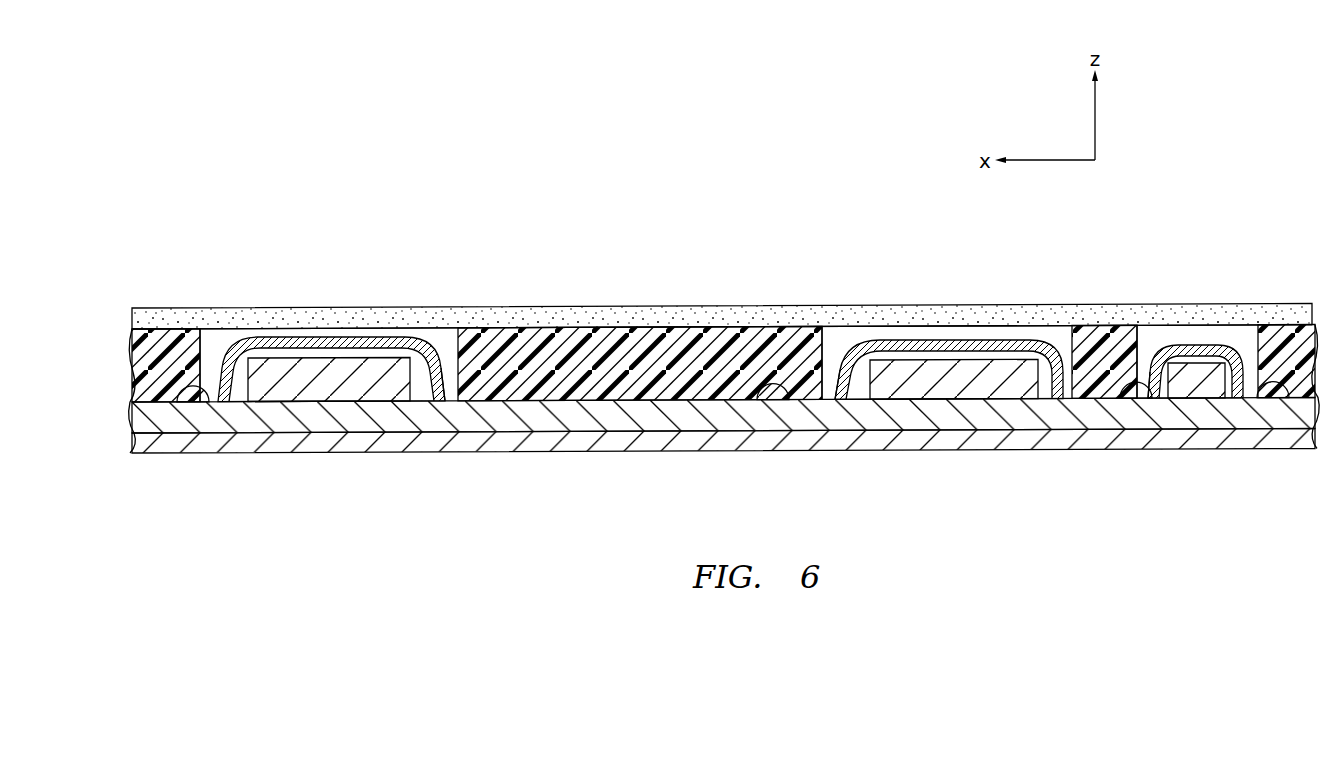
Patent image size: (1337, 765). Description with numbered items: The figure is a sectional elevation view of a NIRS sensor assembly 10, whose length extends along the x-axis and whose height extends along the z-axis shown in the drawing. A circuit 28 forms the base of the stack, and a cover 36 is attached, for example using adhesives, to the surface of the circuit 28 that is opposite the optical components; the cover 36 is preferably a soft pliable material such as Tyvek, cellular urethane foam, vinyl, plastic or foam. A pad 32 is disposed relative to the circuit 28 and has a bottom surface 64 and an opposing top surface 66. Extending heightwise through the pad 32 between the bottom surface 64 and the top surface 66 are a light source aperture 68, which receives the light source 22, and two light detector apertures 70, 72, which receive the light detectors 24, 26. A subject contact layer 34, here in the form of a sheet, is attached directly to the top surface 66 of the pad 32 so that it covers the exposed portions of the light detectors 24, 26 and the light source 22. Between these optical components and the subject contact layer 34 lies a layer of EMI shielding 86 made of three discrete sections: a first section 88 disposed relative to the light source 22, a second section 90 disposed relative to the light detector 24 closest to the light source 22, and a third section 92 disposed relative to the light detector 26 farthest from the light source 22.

The NIRS sensor assembly 10 is at (273, 197).
The light source 22 is at (1198, 372).
The light detector 24 is at (985, 370).
The light detector 26 is at (300, 360).
The circuit 28 is at (918, 415).
The pad 32 is at (143, 335).
The subject contact layer 34 is at (737, 315).
The cover 36 is at (820, 440).
The bottom surface 64 is at (203, 402).
The top surface 66 is at (172, 327).
The light source aperture 68 is at (1150, 342).
The light detector aperture 70 is at (838, 338).
The light detector aperture 72 is at (220, 336).
The EMI shielding 86 is at (443, 345).
The first section 88 is at (1228, 347).
The second section 90 is at (932, 342).
The third section 92 is at (392, 338).